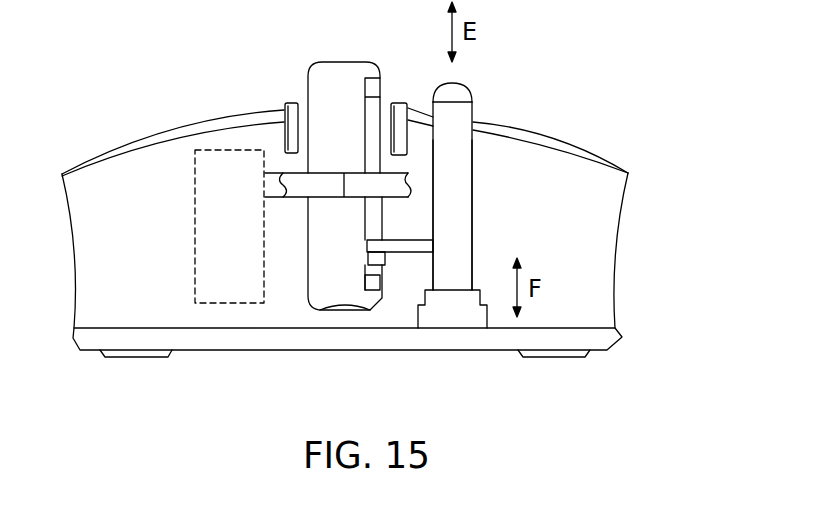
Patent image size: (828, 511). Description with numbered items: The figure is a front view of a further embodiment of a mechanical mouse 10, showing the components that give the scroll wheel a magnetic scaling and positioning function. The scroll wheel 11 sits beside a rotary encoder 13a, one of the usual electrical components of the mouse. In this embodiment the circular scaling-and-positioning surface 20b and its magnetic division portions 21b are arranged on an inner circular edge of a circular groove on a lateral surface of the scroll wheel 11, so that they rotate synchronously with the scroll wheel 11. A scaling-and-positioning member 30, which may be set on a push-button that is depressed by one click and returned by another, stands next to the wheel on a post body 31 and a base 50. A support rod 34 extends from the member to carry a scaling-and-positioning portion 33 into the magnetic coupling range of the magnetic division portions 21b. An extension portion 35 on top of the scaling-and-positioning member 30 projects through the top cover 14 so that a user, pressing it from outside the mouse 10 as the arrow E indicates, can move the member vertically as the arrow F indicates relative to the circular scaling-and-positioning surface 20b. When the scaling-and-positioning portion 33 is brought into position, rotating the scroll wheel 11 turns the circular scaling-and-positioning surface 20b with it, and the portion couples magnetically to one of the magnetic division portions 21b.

The mechanical mouse 10 is at (562, 134).
The scroll wheel 11 is at (309, 64).
The rotary encoder 13a is at (224, 160).
The top cover 14 is at (587, 154).
The circular scaling-and-positioning surface 20b is at (355, 285).
The magnetic division portions 21b is at (361, 83).
The scaling-and-positioning member 30 is at (509, 169).
The post body 31 is at (460, 233).
The scaling-and-positioning portion 33 is at (378, 259).
The support rod 34 is at (403, 243).
The extension portion 35 is at (452, 92).
The base 50 is at (458, 320).